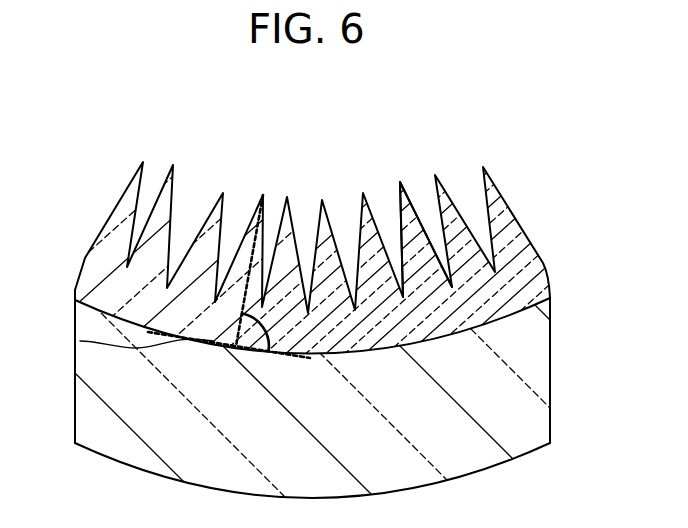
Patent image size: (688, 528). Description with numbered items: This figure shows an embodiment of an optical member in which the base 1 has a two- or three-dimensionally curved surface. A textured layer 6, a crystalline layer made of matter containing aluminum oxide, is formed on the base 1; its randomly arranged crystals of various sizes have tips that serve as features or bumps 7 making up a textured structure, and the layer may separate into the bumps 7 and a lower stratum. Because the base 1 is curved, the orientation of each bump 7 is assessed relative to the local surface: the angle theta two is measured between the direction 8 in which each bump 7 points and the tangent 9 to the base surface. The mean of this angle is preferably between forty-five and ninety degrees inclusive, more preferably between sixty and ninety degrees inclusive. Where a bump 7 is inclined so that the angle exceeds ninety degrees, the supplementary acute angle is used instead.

The base 1 is at (533, 373).
The textured layer 6 is at (528, 272).
The feature (bump) 7 is at (400, 182).
The direction of bump 8 is at (247, 252).
The tangent to base surface 9 is at (80, 341).